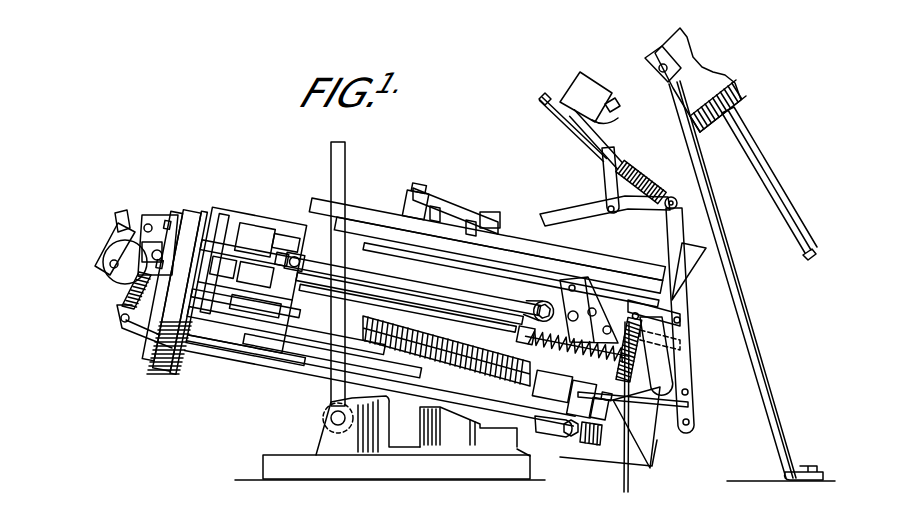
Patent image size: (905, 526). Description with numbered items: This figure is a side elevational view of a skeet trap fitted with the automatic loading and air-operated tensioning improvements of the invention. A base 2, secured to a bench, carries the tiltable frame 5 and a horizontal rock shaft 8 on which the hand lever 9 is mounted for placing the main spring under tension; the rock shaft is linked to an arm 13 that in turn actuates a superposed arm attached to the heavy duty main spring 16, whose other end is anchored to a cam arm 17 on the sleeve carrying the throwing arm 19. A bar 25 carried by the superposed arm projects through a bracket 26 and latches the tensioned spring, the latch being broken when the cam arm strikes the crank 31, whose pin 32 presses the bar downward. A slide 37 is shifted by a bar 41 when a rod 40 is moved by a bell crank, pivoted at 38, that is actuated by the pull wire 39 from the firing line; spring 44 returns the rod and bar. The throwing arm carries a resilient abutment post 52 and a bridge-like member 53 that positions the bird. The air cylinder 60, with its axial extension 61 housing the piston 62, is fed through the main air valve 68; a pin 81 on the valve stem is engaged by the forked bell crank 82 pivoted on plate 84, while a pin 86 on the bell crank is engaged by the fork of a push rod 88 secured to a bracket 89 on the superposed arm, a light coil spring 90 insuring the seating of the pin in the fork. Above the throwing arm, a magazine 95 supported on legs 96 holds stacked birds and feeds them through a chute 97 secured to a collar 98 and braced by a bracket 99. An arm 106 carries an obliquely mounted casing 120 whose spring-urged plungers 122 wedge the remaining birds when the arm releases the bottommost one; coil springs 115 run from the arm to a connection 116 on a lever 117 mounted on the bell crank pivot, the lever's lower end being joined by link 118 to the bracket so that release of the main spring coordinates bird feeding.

The base 2 is at (263, 464).
The frame 5 is at (475, 431).
The rock shaft 8 is at (328, 417).
The hand lever 9 is at (324, 391).
The arm 13 is at (587, 422).
The main spring 16 is at (447, 340).
The cam arm 17 is at (335, 301).
The throwing arm 19 is at (370, 218).
The bar 25 is at (490, 332).
The bracket 26 is at (232, 270).
The crank 31 is at (298, 256).
The cam or pin 32 is at (294, 260).
The slide 37 is at (590, 318).
The bell crank pivot 38 is at (683, 325).
The pull wire 39 is at (624, 478).
The rod 40 is at (678, 356).
The bar 41 is at (548, 281).
The spring 44 is at (629, 309).
The resilient post or abutment 52 is at (407, 192).
The bridge-like member 53 is at (450, 204).
The air cylinder 60 is at (160, 360).
The axial extension 61 is at (250, 348).
The piston 62 is at (283, 350).
The main air valve 68 is at (106, 255).
The pin or arm 81 is at (118, 216).
The bell crank 82 is at (112, 236).
The plate 84 is at (122, 293).
The pin 86 is at (160, 247).
The push rod 88 is at (233, 300).
The bracket 89 is at (640, 413).
The light duty coil spring 90 is at (120, 303).
The magazine 95 is at (720, 81).
The legs 96 is at (787, 240).
The chute 97 is at (618, 223).
The collar 98 is at (607, 141).
The bracket 99 is at (602, 179).
The arm 106 is at (550, 127).
The coil springs 115 is at (646, 176).
The spring connection 116 is at (678, 203).
The lever 117 is at (668, 252).
The link 118 is at (690, 400).
The casing 120 is at (580, 79).
The plungers 122 is at (612, 108).